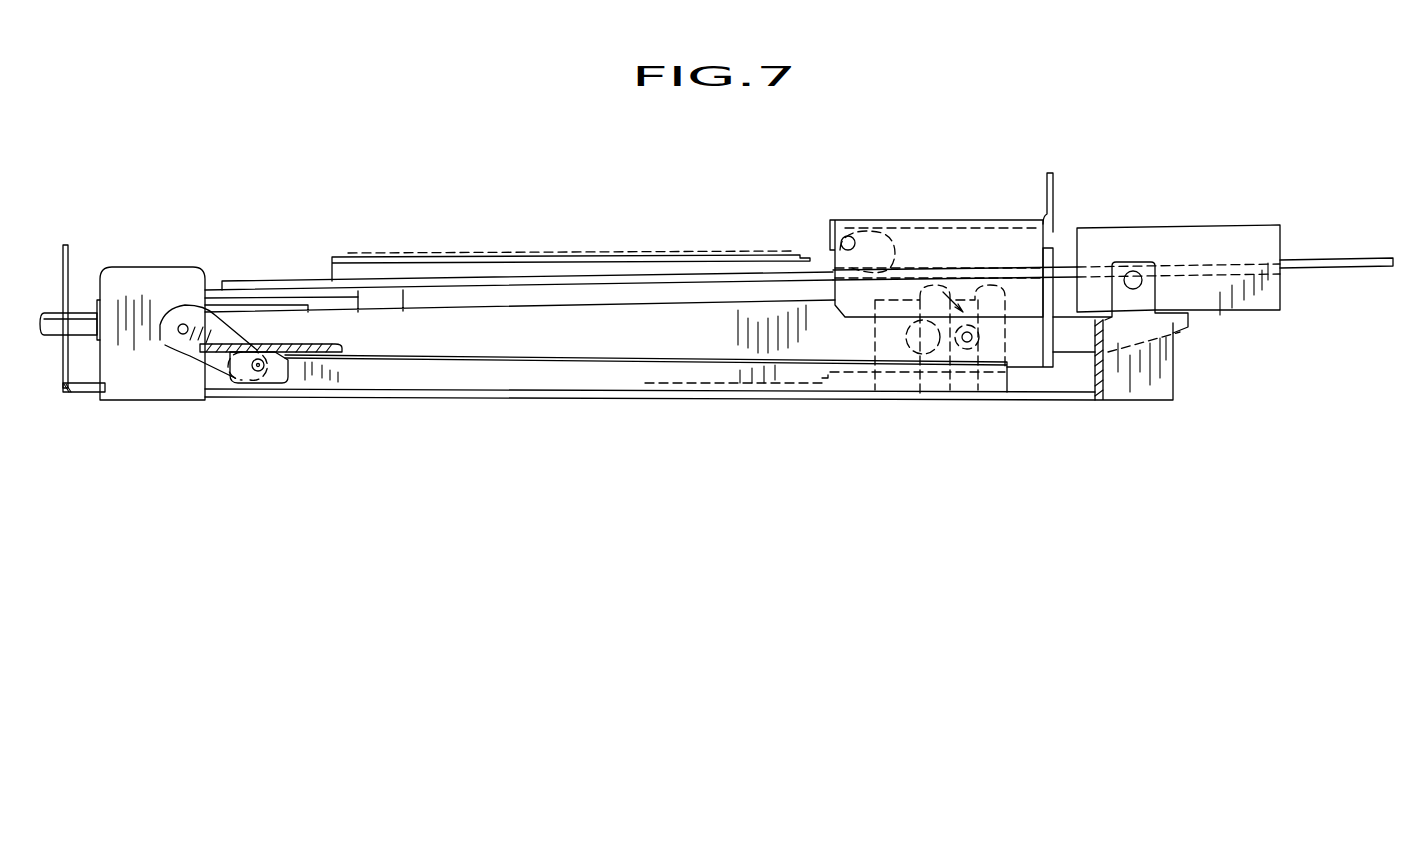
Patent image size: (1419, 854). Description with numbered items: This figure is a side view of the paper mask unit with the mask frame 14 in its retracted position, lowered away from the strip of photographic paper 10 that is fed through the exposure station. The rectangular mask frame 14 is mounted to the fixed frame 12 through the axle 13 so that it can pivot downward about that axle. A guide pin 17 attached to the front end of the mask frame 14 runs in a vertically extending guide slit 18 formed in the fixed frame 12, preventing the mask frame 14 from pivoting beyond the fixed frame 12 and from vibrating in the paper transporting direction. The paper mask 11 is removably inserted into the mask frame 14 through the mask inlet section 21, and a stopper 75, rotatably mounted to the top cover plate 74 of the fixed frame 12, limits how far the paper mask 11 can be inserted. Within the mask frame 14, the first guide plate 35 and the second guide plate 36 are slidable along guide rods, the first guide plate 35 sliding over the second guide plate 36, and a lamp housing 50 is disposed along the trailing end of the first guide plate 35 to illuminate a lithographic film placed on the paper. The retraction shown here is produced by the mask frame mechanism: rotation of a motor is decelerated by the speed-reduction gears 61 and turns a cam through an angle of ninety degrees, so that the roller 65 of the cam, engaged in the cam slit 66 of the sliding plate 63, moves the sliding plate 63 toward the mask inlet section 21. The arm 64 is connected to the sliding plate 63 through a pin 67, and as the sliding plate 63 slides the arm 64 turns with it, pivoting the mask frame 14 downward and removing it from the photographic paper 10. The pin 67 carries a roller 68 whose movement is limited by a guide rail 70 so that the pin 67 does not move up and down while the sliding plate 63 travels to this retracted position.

The photographic paper 10 is at (490, 253).
The paper mask 11 is at (1357, 272).
The fixed frame 12 is at (58, 352).
The axle 13 is at (1132, 271).
The mask frame 14 is at (137, 385).
The guide pin 17 is at (58, 317).
The guide slit 18 is at (59, 272).
The mask inlet section 21 is at (1172, 226).
The first guide plate 35 is at (297, 285).
The second guide plate 36 is at (245, 283).
The lamp housing 50 is at (380, 290).
The speed-reduction gears 61 is at (878, 320).
The sliding plate 63 is at (350, 377).
The arm 64 is at (170, 342).
The roller 65 is at (978, 346).
The cam slit 66 is at (937, 352).
The pin 67 is at (257, 380).
The roller 68 is at (273, 373).
The guide rail 70 is at (337, 340).
The top cover plate 74 is at (960, 220).
The stopper 75 is at (876, 215).